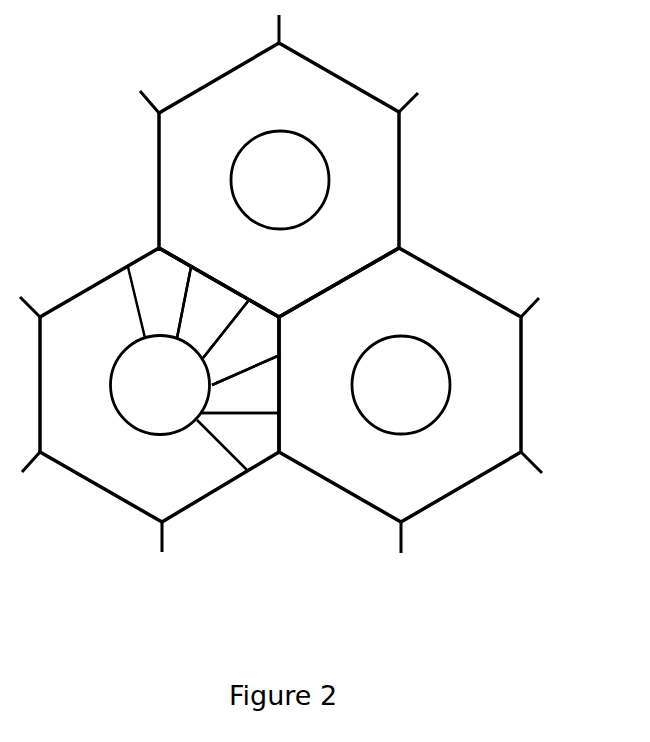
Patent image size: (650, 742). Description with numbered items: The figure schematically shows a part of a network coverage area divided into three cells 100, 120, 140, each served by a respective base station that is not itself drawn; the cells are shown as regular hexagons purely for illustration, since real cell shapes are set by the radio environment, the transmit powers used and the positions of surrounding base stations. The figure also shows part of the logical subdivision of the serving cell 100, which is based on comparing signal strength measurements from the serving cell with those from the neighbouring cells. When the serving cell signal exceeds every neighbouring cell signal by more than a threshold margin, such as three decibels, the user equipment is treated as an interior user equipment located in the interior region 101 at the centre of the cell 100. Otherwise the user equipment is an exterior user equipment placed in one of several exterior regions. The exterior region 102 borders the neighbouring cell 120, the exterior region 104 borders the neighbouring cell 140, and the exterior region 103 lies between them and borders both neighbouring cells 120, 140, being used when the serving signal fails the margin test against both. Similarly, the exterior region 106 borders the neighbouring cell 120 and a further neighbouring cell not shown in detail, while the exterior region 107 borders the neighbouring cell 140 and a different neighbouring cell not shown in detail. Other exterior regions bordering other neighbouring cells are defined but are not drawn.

The cell 100 is at (103, 490).
The interior region 101 is at (178, 397).
The exterior region 102 is at (222, 324).
The exterior region 103 is at (263, 359).
The exterior region 104 is at (269, 404).
The exterior region 106 is at (178, 294).
The exterior region 107 is at (269, 448).
The neighbouring cell 120 is at (401, 177).
The neighbouring cell 140 is at (523, 407).